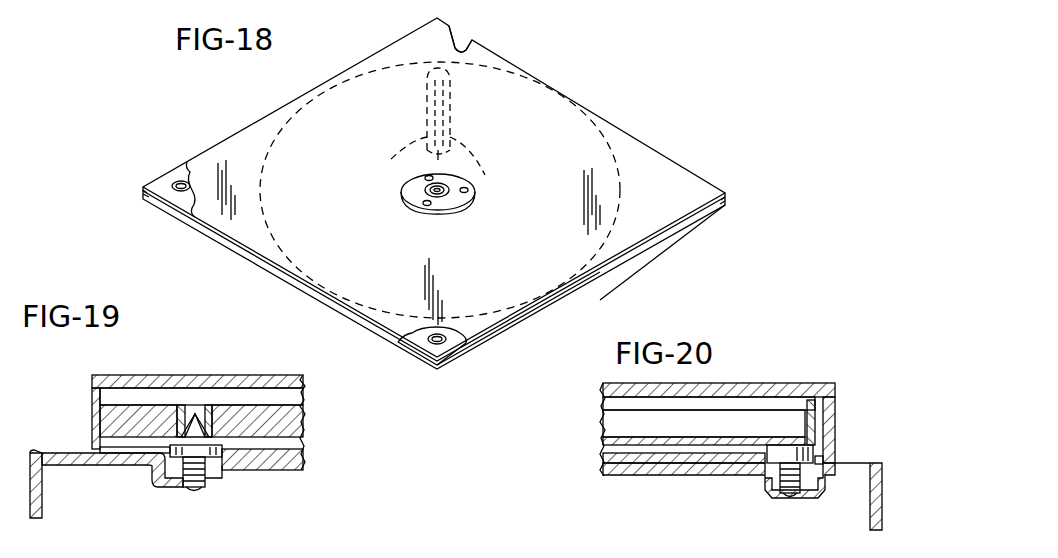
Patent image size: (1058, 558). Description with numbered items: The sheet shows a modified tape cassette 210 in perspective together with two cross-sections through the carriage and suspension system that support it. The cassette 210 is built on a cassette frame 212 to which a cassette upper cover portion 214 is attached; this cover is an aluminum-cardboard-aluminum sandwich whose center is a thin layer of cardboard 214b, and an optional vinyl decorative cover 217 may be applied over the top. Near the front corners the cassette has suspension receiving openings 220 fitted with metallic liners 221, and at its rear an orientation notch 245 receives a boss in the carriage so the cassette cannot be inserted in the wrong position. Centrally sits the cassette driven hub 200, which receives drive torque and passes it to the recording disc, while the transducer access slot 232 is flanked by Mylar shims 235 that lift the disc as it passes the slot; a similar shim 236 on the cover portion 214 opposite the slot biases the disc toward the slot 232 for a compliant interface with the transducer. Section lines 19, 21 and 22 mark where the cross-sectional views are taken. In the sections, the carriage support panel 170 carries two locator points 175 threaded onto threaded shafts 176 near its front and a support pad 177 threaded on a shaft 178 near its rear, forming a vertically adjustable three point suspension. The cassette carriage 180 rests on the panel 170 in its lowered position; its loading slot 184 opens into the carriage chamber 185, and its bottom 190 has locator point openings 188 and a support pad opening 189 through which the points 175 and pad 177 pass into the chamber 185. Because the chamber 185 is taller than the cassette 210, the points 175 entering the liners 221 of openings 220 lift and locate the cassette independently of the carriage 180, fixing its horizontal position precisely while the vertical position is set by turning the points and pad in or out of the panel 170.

In FIG. 19, the carriage support panel 170 is at (70, 462).
In FIG. 20, the carriage support panel 170 is at (652, 470).
In FIG. 19, the locator points 175 is at (195, 412).
In FIG. 19, the threaded shafts 176 is at (183, 480).
In FIG. 20, the support pad 177 is at (770, 455).
In FIG. 20, the shaft 178 is at (786, 495).
In FIG. 19, the cassette carriage 180 is at (292, 382).
In FIG. 20, the cassette carriage 180 is at (822, 392).
In FIG. 19, the loading slot 184 is at (93, 430).
In FIG. 19, the carriage chamber 185 is at (306, 395).
In FIG. 20, the carriage chamber 185 is at (608, 403).
In FIG. 19, the locator point openings 188 is at (226, 458).
In FIG. 20, the support pad opening 189 is at (819, 464).
In FIG. 19, the bottom 190 is at (300, 450).
In FIG. 20, the bottom 190 is at (606, 458).
In FIG. 18, the cassette driven hub 200 is at (458, 202).
In FIG. 18, the tape cassette 210 is at (657, 143).
In FIG. 19, the tape cassette 210 is at (103, 416).
In FIG. 20, the tape cassette 210 is at (610, 426).
In FIG. 18, the cassette frame 212 is at (712, 218).
In FIG. 18, the cassette upper cover portion 214 is at (450, 345).
In FIG. 19, the layer of cardboard 214b is at (275, 552).
In FIG. 18, the vinyl decorative cover 217 is at (488, 316).
In FIG. 18, the suspension receiving openings 220 is at (181, 180).
In FIG. 19, the suspension receiving openings 220 is at (188, 410).
In FIG. 18, the metallic liners 221 is at (168, 182).
In FIG. 19, the metallic liners 221 is at (216, 418).
In FIG. 18, the transducer access slot 232 is at (418, 62).
In FIG. 18, the Mylar shims 235 is at (398, 160).
In FIG. 18, the shim 236 is at (450, 140).
In FIG. 18, the orientation notch 245 is at (462, 52).
In FIG. 18, the section line 19— 19 is at (195, 135).
In FIG. 18, the section line 21- 21 is at (592, 67).
In FIG. 18, the section line 22- 22 is at (484, 92).